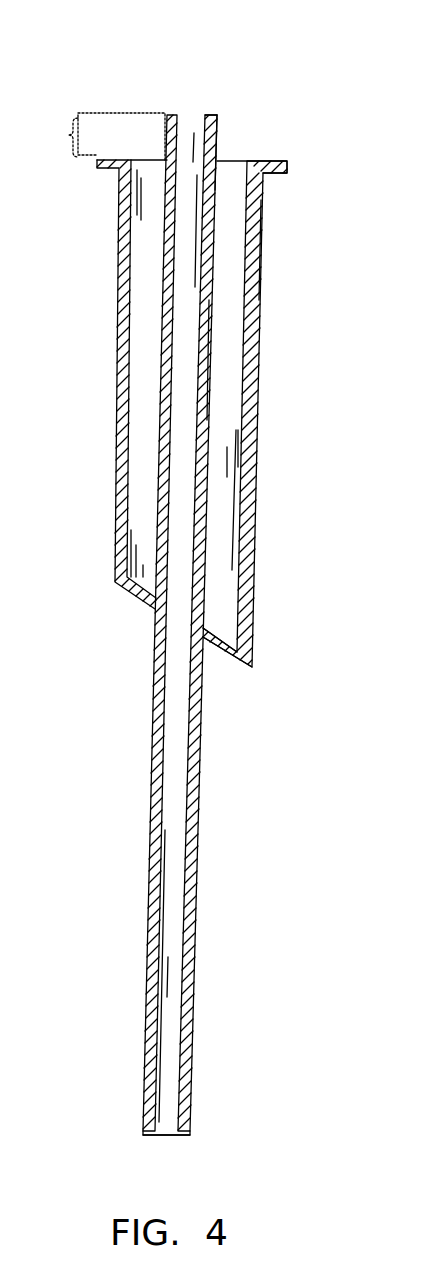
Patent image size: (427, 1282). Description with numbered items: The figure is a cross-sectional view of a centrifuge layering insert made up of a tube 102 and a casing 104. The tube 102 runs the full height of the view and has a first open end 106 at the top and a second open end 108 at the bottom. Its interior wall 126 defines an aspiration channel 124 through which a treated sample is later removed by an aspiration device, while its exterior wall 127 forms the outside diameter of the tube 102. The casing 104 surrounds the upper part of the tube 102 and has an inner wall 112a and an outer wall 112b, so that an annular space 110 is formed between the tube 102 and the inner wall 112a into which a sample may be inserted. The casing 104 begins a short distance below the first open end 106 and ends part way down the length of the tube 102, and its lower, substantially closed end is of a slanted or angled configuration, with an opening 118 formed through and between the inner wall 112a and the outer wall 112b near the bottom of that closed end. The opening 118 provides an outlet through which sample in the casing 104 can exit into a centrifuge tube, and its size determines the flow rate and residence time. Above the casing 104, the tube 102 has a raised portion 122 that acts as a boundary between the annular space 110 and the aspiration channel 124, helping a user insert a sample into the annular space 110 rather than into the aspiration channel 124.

The tube 102 is at (208, 367).
The casing 104 is at (254, 427).
The first open end 106 is at (171, 114).
The second open end 108 is at (186, 1136).
The annular space 110 is at (150, 173).
The inner wall 112a is at (246, 197).
The outer wall 112b is at (259, 245).
The opening 118 is at (248, 638).
The raised portion 122 is at (68, 135).
The aspiration channel 124 is at (183, 130).
The interior wall 126 is at (252, 70).
The exterior wall 127 is at (218, 140).